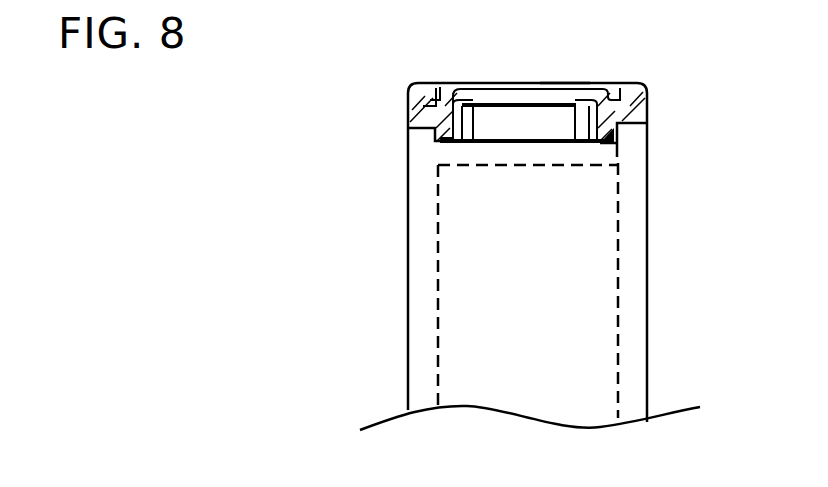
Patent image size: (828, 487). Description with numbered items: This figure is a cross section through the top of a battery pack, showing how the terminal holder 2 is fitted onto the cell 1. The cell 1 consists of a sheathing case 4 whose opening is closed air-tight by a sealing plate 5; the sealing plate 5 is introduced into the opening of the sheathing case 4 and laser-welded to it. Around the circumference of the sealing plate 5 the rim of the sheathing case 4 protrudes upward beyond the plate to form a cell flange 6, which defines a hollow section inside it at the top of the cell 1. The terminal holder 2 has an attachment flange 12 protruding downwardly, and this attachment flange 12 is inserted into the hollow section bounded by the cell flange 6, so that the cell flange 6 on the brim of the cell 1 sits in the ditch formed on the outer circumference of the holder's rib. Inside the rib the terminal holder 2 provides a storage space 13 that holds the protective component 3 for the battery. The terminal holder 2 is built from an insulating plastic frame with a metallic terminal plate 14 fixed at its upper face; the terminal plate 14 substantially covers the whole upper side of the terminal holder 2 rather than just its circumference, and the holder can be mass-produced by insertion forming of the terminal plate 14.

The cell 1 is at (365, 248).
The terminal holder 2 is at (642, 90).
The protective component 3 is at (517, 133).
The sheathing case 4 is at (408, 315).
The sealing plate 5 is at (572, 158).
The cell flange 6 is at (413, 137).
The attachment flange 12 is at (446, 142).
The storage space 13 is at (433, 100).
The terminal plate 14 is at (563, 81).